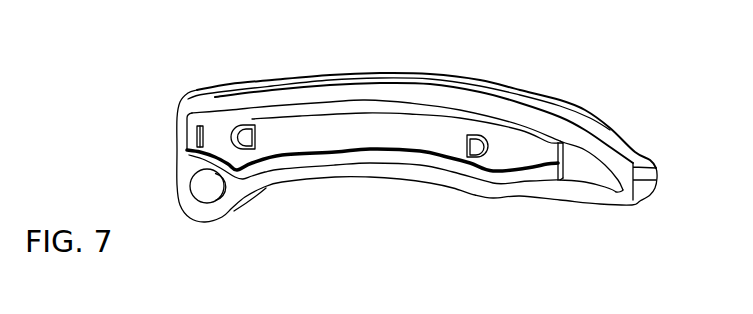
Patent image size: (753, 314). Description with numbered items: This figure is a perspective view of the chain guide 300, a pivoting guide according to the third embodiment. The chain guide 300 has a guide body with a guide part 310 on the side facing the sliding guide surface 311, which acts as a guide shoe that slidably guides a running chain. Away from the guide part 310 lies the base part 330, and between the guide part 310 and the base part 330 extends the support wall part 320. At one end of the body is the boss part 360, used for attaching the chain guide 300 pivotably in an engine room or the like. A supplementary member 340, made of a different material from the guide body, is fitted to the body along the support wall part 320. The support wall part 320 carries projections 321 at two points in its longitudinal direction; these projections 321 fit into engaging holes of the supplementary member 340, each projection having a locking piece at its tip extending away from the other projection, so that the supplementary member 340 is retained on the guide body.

The chain guide 300 is at (104, 75).
The guide part 310 is at (352, 95).
The sliding guide surface 311 is at (415, 82).
The support wall part 320 is at (578, 167).
The projections 321 is at (243, 124).
The base part 330 is at (355, 170).
The supplementary member 340 is at (390, 128).
The boss part 360 is at (177, 192).